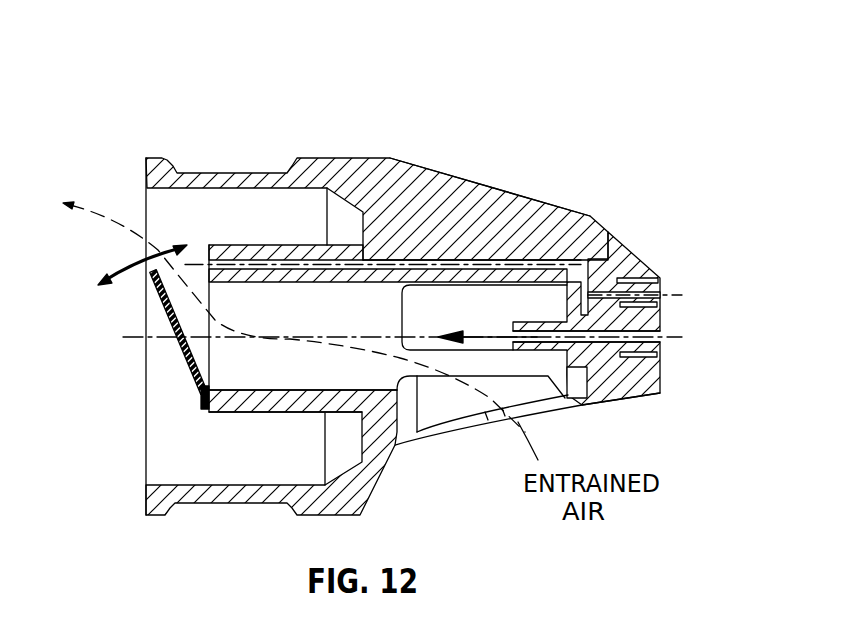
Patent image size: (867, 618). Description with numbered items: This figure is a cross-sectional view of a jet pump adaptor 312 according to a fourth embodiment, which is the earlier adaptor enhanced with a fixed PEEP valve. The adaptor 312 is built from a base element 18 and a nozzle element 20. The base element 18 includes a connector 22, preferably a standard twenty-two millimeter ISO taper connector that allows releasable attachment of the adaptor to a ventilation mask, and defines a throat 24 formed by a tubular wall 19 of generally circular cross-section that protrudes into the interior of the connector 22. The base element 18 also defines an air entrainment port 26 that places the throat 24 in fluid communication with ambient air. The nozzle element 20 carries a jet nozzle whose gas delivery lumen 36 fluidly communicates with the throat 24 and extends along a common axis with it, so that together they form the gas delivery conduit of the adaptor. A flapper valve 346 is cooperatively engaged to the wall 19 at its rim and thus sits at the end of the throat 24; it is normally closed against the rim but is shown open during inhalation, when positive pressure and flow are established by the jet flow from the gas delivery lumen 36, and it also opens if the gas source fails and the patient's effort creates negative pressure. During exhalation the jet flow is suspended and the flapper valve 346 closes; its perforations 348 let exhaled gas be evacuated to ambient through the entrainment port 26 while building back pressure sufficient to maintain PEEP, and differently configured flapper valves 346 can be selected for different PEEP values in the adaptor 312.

The base element 18 is at (375, 152).
The connector 22 is at (178, 174).
The adaptor 312 is at (508, 150).
The throat 24 is at (240, 301).
The nozzle element 20 is at (648, 232).
The gas delivery lumen 36 is at (655, 336).
The tubular wall 19 is at (247, 410).
The air entrainment port 26 is at (452, 427).
The flapper valve 346 is at (168, 349).
The perforations 348 is at (155, 294).